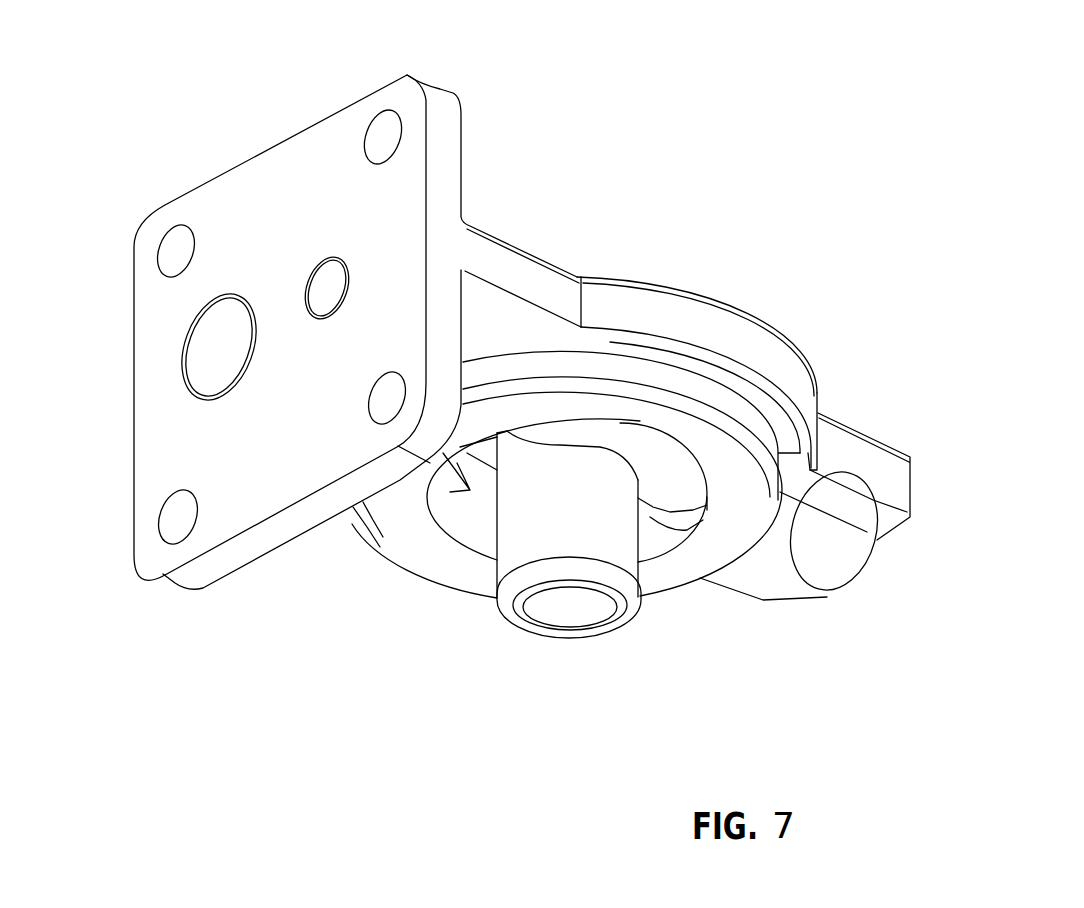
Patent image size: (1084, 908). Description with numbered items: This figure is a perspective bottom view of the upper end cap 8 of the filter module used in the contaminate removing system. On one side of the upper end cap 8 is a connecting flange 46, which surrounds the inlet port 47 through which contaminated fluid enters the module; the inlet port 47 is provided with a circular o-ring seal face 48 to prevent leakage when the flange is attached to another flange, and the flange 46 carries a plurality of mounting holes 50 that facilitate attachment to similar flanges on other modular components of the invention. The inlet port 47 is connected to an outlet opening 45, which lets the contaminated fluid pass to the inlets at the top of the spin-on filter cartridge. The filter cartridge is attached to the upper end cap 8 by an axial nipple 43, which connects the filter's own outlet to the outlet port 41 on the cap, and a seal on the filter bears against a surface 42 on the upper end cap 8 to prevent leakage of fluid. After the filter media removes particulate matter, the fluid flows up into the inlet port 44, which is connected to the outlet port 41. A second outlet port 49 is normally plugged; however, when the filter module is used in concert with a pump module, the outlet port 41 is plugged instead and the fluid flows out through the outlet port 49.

The upper end cap 8 is at (720, 296).
The outlet port 41 is at (876, 561).
The surface 42 is at (725, 537).
The axial nipple 43 is at (632, 565).
The inlet port 44 is at (570, 610).
The outlet opening 45 is at (479, 454).
The connecting flange 46 is at (139, 583).
The inlet port 47 is at (215, 343).
The circular o-ring seal face 48 is at (176, 396).
The outlet port 49 is at (327, 288).
The mounting holes 50 is at (387, 138).